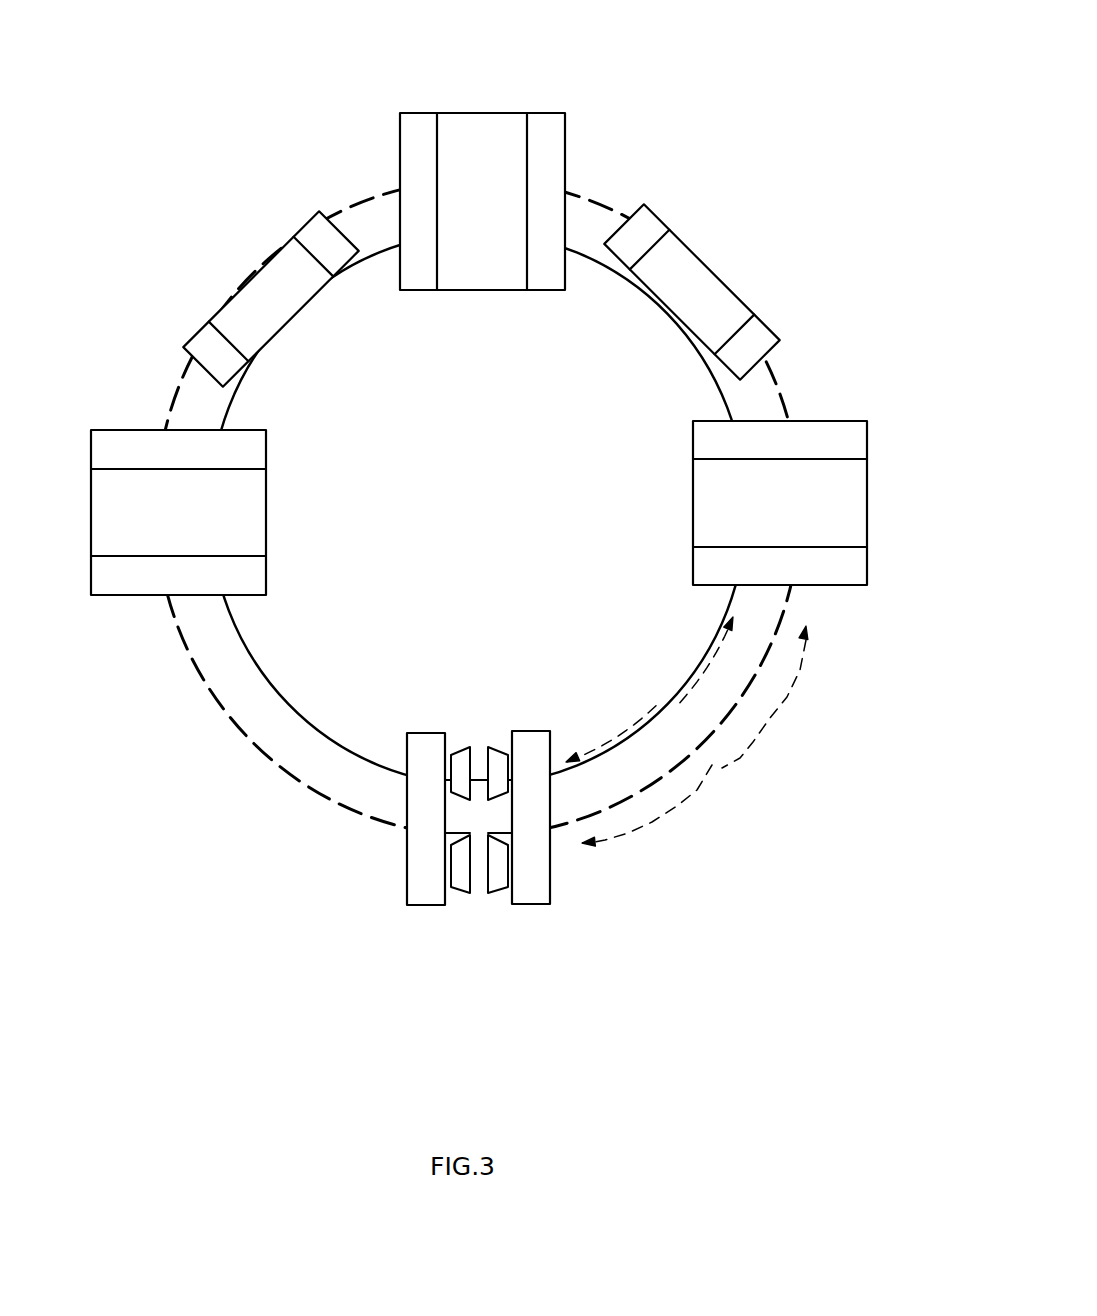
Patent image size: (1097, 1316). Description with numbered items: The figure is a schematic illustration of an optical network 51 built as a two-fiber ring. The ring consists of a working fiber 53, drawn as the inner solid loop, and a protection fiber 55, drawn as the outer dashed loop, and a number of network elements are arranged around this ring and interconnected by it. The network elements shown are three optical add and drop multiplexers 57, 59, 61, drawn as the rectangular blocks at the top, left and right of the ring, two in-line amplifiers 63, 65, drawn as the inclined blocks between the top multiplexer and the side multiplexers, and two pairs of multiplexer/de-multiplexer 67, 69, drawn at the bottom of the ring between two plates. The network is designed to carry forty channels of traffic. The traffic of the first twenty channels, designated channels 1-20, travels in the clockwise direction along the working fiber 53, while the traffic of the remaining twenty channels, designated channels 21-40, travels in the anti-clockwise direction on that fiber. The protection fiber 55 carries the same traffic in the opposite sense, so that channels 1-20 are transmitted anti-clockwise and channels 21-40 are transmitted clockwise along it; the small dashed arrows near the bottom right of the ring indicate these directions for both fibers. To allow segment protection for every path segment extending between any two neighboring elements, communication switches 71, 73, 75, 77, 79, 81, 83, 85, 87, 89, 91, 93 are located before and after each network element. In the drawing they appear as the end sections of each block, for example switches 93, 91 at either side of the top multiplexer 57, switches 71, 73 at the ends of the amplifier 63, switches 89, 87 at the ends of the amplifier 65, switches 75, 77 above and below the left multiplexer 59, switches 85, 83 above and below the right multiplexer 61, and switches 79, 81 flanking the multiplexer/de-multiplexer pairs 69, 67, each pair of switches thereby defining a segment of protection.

The network 51 is at (706, 80).
The working fiber 53 is at (238, 735).
The protection fiber 55 is at (330, 742).
The optical add and drop multiplexer 57 is at (493, 112).
The optical add and drop multiplexer 59 is at (268, 515).
The optical add and drop multiplexer 61 is at (693, 507).
The in-line amplifier 63 is at (265, 262).
The in-line amplifier 65 is at (705, 262).
The multiplexer/de-multiplexer pair 67 is at (478, 890).
The multiplexer/de-multiplexer pair 69 is at (478, 748).
The communication switch 71 is at (308, 212).
The communication switch 73 is at (192, 335).
The communication switch 75 is at (268, 450).
The communication switch 77 is at (268, 583).
The communication switch 79 is at (403, 845).
The communication switch 81 is at (552, 843).
The communication switch 83 is at (693, 575).
The communication switch 85 is at (693, 442).
The communication switch 87 is at (775, 325).
The communication switch 89 is at (655, 212).
The communication switch 91 is at (545, 112).
The communication switch 93 is at (423, 112).
The channels 1 to 20 1-20 is at (703, 697).
The channels 21 to 40 21-40 is at (660, 730).